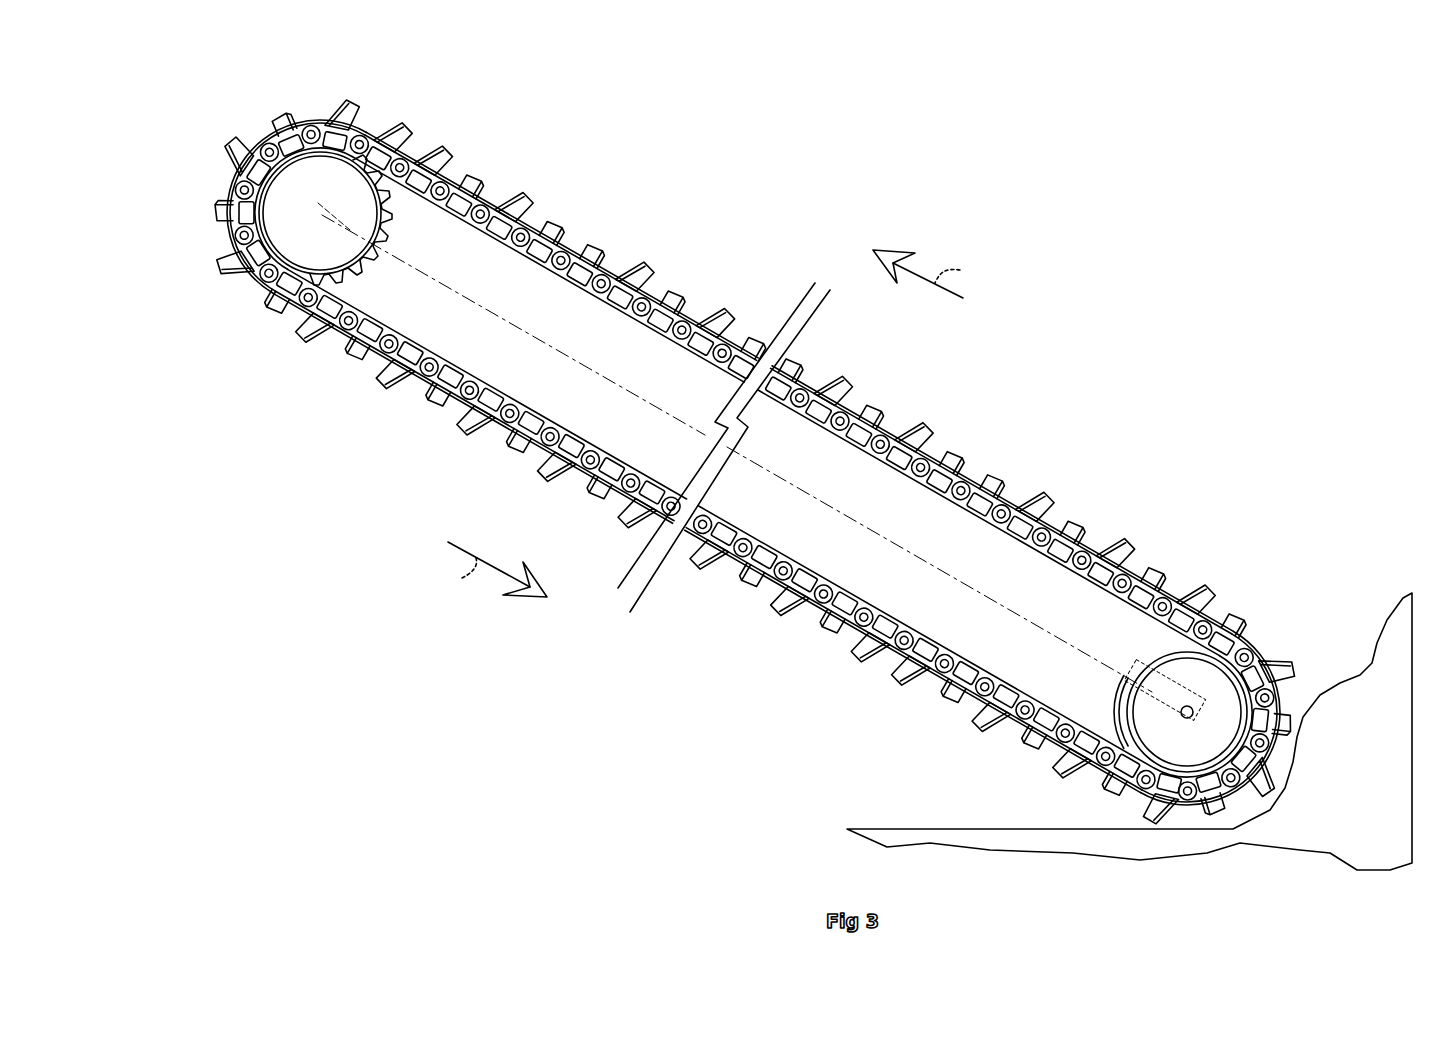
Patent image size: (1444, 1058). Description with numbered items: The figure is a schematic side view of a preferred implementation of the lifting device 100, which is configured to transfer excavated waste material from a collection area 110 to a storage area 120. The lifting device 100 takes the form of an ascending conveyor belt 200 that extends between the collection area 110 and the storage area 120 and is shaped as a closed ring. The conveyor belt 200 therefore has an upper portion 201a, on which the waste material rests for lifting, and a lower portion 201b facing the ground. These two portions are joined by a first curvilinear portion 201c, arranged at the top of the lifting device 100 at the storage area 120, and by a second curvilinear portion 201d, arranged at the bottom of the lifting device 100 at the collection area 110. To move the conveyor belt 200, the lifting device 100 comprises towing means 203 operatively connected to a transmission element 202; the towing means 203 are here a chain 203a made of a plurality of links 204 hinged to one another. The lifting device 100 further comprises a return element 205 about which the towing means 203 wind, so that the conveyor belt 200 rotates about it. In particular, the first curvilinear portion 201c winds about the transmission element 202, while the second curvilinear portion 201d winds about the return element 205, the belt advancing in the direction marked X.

The lifting device 100 is at (1057, 362).
The collection area 110 is at (1202, 862).
The storage area 120 is at (248, 116).
The conveyor belt 200 is at (1022, 470).
The upper portion 201a is at (693, 303).
The lower portion 201b is at (725, 578).
The first curvilinear portion 201c is at (207, 138).
The second curvilinear portion 201d is at (1270, 645).
The transmission element 202 is at (387, 233).
The towing means 203 is at (1095, 547).
The chain 203a is at (1152, 582).
The links 204 is at (1092, 583).
The return element 205 is at (1137, 717).